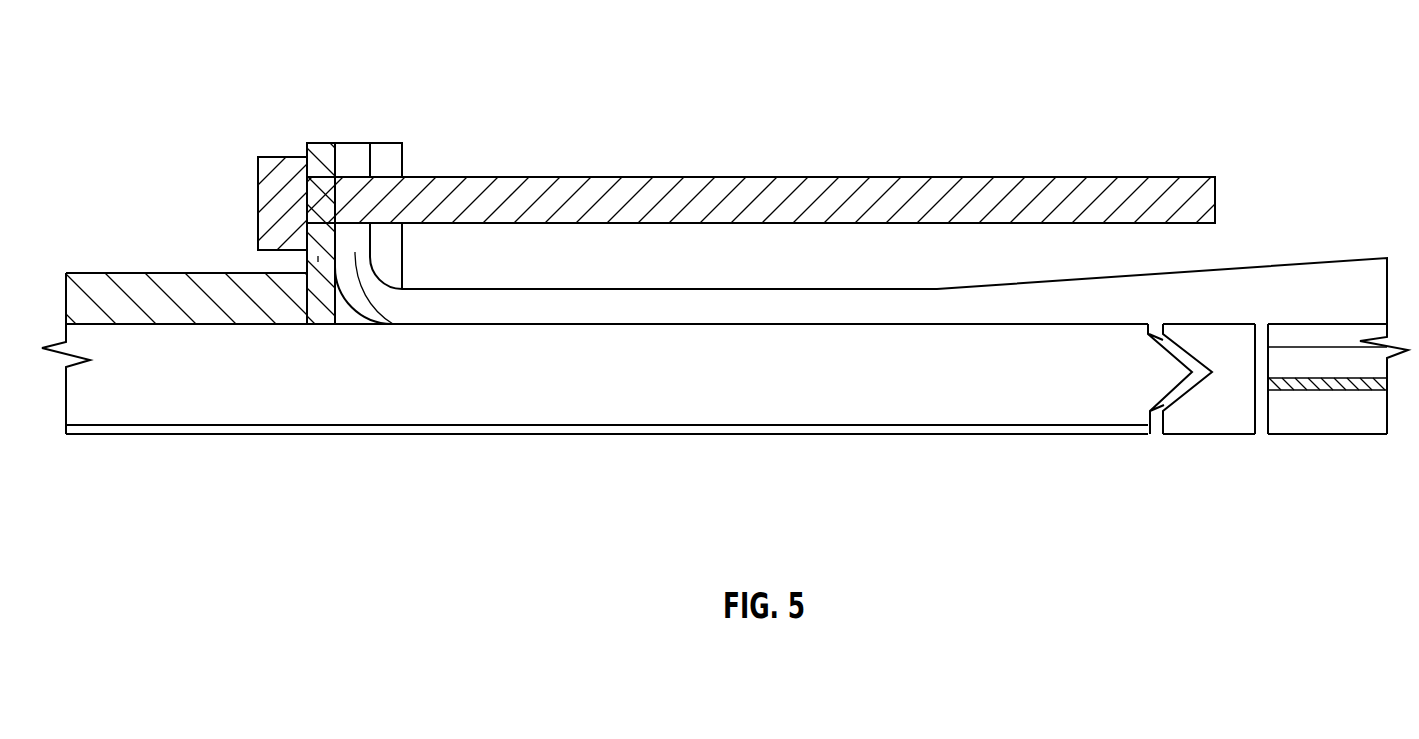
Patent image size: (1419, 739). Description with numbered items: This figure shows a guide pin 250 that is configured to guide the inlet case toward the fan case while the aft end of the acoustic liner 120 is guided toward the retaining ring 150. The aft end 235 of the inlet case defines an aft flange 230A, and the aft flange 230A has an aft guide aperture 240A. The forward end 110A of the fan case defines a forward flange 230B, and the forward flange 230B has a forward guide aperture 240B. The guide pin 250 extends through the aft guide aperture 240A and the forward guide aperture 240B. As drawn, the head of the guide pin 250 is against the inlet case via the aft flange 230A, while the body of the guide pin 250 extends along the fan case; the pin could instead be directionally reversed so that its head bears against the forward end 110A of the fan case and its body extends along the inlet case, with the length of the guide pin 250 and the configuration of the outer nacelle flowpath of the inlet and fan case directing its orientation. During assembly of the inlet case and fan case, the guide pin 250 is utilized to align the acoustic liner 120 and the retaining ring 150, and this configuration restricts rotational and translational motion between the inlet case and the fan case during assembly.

The acoustic liner 120 is at (887, 336).
The retaining ring 150 is at (1172, 375).
The guide pin 250 is at (715, 188).
The aft end 235 is at (197, 168).
The aft flange 230A is at (318, 143).
The forward flange 230B is at (358, 140).
The forward end 110A is at (390, 132).
The aft guide aperture 240A is at (320, 260).
The forward guide aperture 240B is at (393, 324).